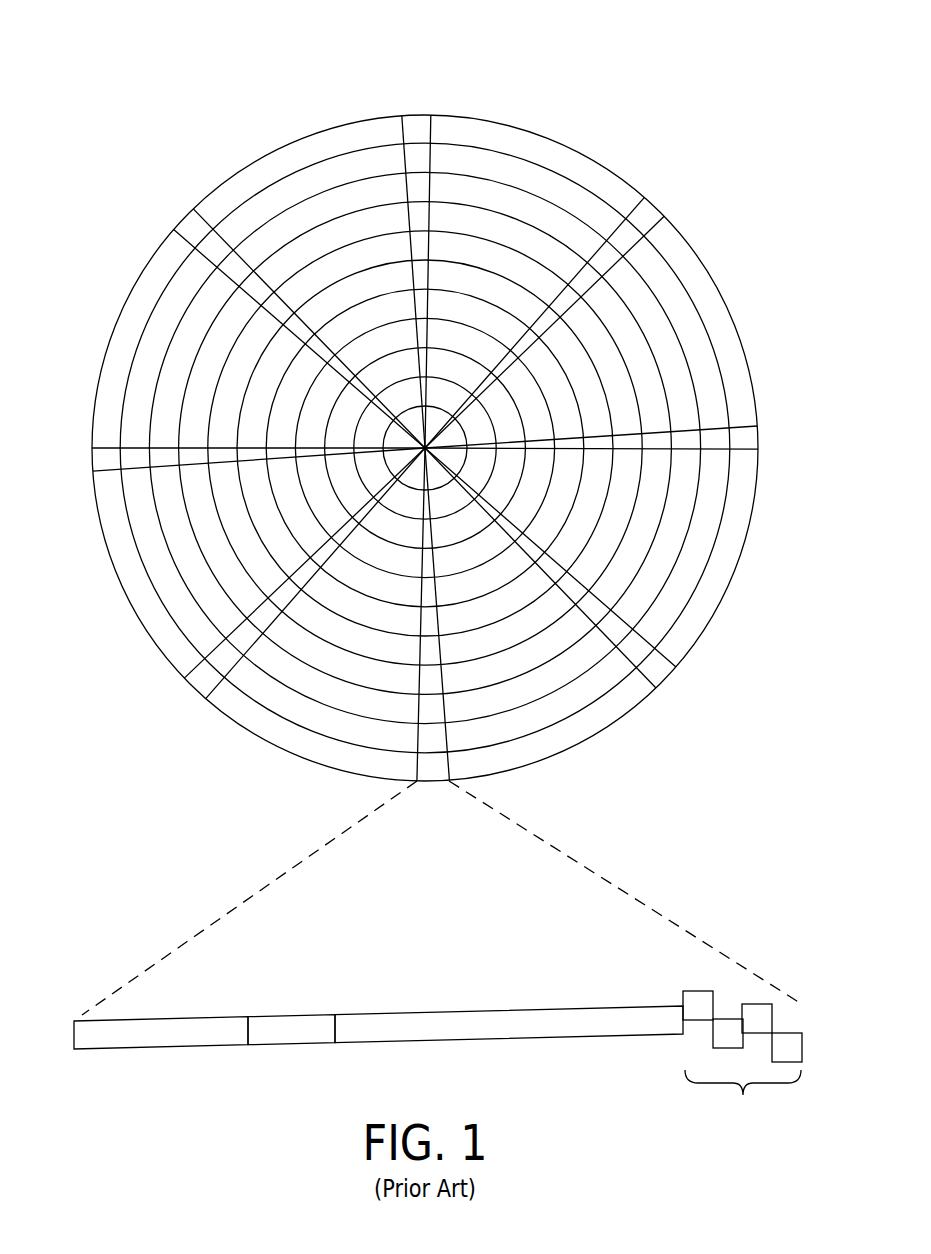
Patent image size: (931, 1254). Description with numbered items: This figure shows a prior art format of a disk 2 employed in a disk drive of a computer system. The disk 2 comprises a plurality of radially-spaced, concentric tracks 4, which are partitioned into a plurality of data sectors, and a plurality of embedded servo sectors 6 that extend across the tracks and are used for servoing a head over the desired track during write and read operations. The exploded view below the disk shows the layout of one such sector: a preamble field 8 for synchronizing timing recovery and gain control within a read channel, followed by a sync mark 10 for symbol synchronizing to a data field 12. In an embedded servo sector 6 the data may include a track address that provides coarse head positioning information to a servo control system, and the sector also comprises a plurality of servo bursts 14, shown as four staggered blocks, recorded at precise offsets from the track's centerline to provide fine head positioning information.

The disk 2 is at (170, 126).
The tracks 4 is at (530, 182).
The embedded servo sectors 6 is at (417, 127).
The preamble field 8 is at (141, 1050).
The sync mark 10 is at (290, 1044).
The data field 12 is at (498, 1041).
The servo bursts 14 is at (666, 970).